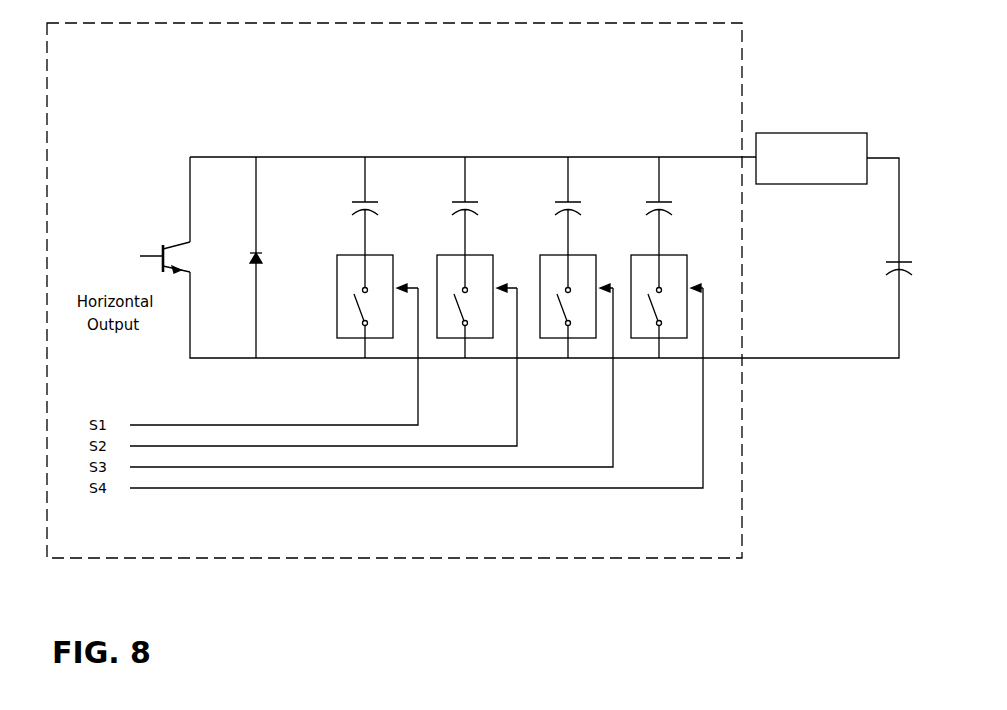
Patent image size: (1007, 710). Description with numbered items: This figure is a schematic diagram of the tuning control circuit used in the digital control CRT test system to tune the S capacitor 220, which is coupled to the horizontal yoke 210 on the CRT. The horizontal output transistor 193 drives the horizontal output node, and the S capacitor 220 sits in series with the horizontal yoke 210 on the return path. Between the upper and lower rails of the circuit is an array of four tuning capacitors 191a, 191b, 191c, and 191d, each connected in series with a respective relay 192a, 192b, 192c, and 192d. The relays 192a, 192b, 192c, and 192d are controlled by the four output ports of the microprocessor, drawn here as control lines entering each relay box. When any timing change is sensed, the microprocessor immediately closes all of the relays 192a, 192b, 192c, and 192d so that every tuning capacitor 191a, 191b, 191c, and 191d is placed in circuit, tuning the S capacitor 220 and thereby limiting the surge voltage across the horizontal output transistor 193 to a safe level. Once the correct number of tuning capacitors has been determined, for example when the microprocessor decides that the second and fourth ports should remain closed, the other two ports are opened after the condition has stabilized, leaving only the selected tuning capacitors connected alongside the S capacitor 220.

The tuning capacitor 191a is at (402, 185).
The tuning capacitor 191b is at (502, 185).
The tuning capacitor 191c is at (605, 185).
The tuning capacitor 191d is at (694, 185).
The relay 192a is at (385, 253).
The relay 192b is at (485, 253).
The relay 192c is at (592, 254).
The relay 192d is at (686, 253).
The horizontal output transistor 193 is at (163, 247).
The horizontal yoke 210 is at (828, 133).
The S capacitor 220 is at (896, 259).